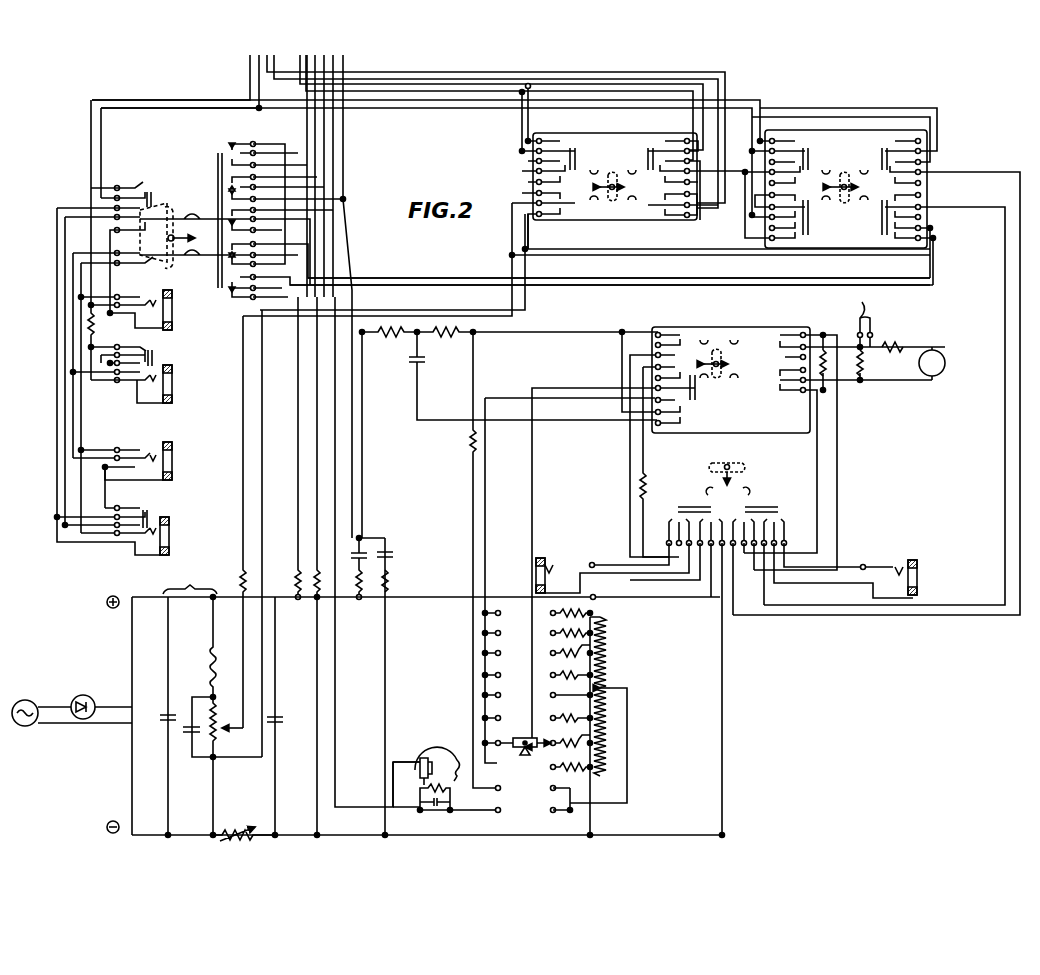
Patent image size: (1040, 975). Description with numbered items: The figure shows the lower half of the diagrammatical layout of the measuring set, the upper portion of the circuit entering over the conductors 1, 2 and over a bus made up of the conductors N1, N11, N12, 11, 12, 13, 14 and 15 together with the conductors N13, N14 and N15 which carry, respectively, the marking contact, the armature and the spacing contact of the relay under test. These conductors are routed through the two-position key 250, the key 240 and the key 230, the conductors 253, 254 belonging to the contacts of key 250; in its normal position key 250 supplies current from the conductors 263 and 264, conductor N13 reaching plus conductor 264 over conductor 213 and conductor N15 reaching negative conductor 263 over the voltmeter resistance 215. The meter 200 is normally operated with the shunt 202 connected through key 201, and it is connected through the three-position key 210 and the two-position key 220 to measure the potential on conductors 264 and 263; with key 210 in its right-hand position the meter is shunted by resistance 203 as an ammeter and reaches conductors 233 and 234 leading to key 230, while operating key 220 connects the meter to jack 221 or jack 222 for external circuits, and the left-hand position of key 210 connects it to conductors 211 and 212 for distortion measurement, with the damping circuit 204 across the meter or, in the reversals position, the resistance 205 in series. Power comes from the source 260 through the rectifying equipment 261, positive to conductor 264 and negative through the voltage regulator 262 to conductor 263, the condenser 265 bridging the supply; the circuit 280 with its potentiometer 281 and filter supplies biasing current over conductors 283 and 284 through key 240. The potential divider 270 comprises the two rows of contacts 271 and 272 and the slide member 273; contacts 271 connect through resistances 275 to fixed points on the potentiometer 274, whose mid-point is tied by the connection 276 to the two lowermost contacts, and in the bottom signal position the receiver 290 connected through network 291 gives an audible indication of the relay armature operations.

The conductor 1 is at (123, 106).
The conductor 2 is at (100, 100).
The conductor N1 is at (250, 65).
The conductor N11 is at (436, 80).
The conductor N12 is at (350, 78).
The conductor N13 is at (332, 133).
The conductor N14 is at (344, 176).
The conductor N15 is at (344, 137).
The conductor 11 is at (428, 90).
The conductor 12 is at (455, 90).
The conductor 13 is at (314, 119).
The conductor 14 is at (334, 160).
The conductor 15 is at (325, 119).
The two-position key 250 is at (493, 221).
The key 240 is at (586, 200).
The key 230 is at (876, 361).
The conductor 253 is at (932, 274).
The conductor 254 is at (935, 286).
The damping circuit 204 is at (412, 330).
The resistance 205 is at (470, 441).
The conductor 211 is at (576, 330).
The conductor 212 is at (572, 386).
The three-position key 210 is at (783, 438).
The key 201 is at (866, 314).
The meter 200 is at (946, 364).
The shunt 202 is at (866, 376).
The resistance 203 is at (828, 376).
The voltmeter resistance 215 is at (316, 548).
The two-position key 220 is at (729, 646).
The jack 221 is at (549, 563).
The jack 222 is at (907, 562).
The conductor 233 is at (940, 606).
The conductor 234 is at (892, 616).
The conductor 213 is at (297, 533).
The conductor 283 is at (242, 533).
The conductor 284 is at (261, 548).
The biasing circuit 280 is at (190, 582).
The potentiometer 281 is at (218, 745).
The source of alternating or direct current 260 is at (25, 701).
The rectifying equipment 261 is at (80, 698).
The voltage regulator 262 is at (238, 830).
The negative conductor 263 is at (630, 834).
The positive conductor 264 is at (660, 602).
The condenser 265 is at (282, 718).
The potential divider 270 is at (562, 605).
The row of contacts 271 is at (553, 818).
The row of contacts 272 is at (497, 818).
The slide member 273 is at (530, 736).
The potentiometer 274 is at (607, 632).
The resistances 275 is at (570, 775).
The connection to mid-point of potentiometer 276 is at (628, 790).
The receiver 290 is at (428, 758).
The network 291 is at (447, 812).